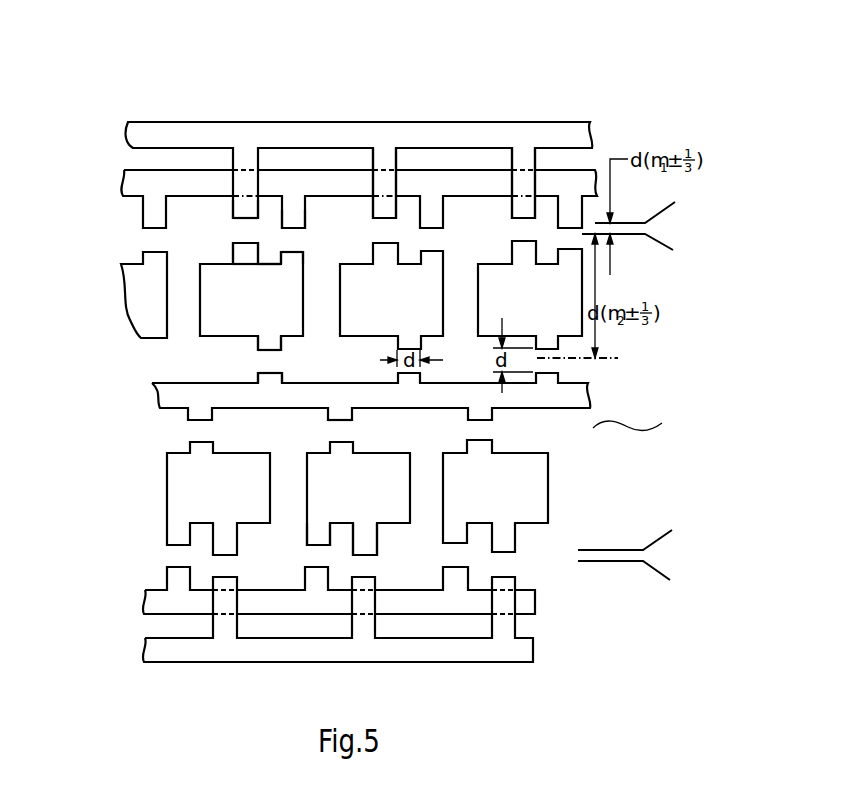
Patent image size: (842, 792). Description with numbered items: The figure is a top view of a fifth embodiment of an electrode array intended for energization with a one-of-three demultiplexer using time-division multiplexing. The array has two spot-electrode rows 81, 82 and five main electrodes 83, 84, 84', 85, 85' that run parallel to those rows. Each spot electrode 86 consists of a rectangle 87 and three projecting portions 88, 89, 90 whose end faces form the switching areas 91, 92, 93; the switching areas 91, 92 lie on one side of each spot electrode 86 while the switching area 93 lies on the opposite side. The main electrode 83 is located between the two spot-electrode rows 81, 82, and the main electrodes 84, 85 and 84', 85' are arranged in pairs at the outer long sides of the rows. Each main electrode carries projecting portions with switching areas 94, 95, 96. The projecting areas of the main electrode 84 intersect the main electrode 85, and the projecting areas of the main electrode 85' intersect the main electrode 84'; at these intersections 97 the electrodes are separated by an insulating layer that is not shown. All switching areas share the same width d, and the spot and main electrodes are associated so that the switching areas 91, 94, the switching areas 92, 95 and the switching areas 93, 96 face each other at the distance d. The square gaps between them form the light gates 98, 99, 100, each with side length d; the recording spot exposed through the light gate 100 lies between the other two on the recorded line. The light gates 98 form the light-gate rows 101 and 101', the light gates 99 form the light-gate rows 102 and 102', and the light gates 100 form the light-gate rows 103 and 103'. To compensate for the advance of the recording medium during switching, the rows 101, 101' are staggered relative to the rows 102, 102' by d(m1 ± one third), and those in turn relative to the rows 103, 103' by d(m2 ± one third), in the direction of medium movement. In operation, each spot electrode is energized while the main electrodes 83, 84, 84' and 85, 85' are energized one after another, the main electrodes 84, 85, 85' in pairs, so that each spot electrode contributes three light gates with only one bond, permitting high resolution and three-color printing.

The spot-electrode row 81 is at (597, 290).
The spot-electrode row 82 is at (592, 478).
The main electrode 83 is at (590, 393).
The main electrode 84 is at (377, 151).
The main electrode 85 is at (375, 175).
The spot electrode 86 is at (292, 268).
The rectangle 87 is at (222, 311).
The projecting portion 88 is at (243, 262).
The projecting portion 89 is at (273, 267).
The projecting portion 90 is at (262, 340).
The switching area 91 is at (240, 214).
The switching area 92 is at (299, 250).
The switching area 93 is at (267, 352).
The switching area 94 is at (242, 242).
The switching area 95 is at (286, 228).
The switching area 96 is at (260, 380).
The intersection 97 is at (525, 183).
The light gate 98 is at (243, 230).
The light gate 99 is at (294, 240).
The light gate 100 is at (263, 363).
The light-gate row 101 is at (650, 208).
The light-gate row 102 is at (644, 248).
The light-gate row 103 is at (622, 357).
The main electrode 84' is at (374, 599).
The main electrode 85' is at (374, 628).
The light-gate row 101' is at (642, 535).
The light-gate row 102' is at (642, 575).
The light-gate row 103' is at (646, 425).